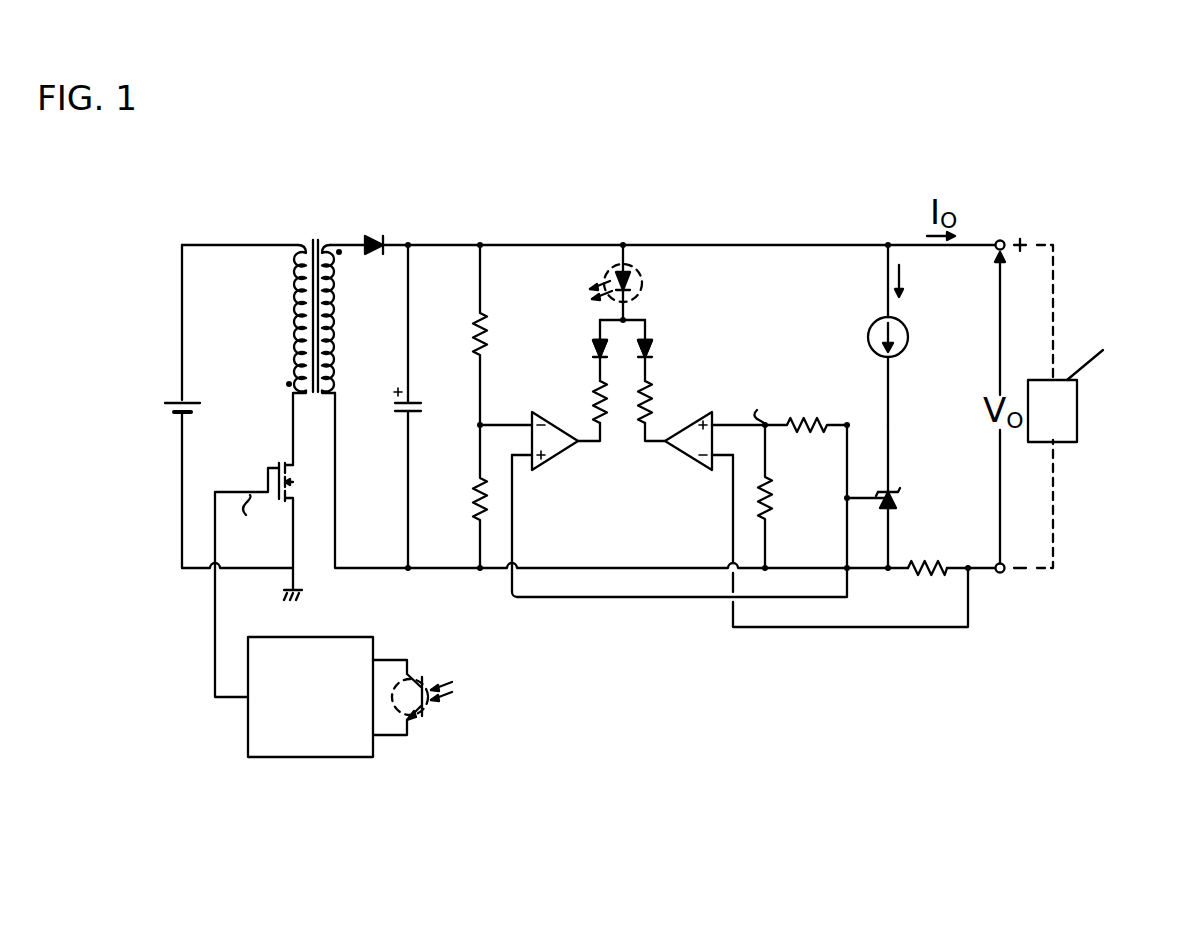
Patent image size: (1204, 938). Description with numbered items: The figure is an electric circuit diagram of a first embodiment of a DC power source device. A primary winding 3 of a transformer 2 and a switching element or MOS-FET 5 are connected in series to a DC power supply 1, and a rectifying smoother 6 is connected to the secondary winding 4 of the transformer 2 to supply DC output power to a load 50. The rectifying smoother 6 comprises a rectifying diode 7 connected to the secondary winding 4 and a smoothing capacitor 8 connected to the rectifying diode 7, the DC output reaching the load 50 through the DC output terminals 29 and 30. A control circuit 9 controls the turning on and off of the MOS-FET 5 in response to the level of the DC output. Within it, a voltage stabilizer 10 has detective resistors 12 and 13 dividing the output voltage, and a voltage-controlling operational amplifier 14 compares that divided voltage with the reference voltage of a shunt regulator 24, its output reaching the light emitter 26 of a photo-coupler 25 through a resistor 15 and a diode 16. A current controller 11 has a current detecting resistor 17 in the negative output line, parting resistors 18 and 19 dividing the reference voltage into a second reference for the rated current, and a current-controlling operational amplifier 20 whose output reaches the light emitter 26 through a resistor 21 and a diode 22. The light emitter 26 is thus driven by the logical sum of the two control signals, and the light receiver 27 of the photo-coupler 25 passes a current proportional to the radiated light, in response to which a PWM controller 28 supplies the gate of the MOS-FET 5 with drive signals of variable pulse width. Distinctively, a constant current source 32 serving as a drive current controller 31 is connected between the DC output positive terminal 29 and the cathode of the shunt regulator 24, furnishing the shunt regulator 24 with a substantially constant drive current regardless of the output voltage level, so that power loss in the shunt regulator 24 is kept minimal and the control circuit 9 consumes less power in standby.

The DC power supply 1 is at (175, 400).
The transformer 2 is at (315, 319).
The primary winding 3 is at (292, 322).
The secondary winding 4 is at (338, 322).
The MOS-FET 5 is at (272, 464).
The rectifying smoother 6 is at (394, 370).
The rectifying diode 7 is at (371, 235).
The smoothing capacitor 8 is at (396, 408).
The control circuit 9 is at (680, 697).
The voltage stabilizer 10 is at (477, 406).
The current controller 11 is at (792, 425).
The detective resistor 12 is at (472, 331).
The detective resistor 13 is at (472, 493).
The voltage-controlling operational amplifier 14 is at (552, 459).
The resistor 15 is at (593, 397).
The diode 16 is at (593, 353).
The current detecting resistor 17 is at (930, 565).
The parting resistor 18 is at (800, 421).
The parting resistor 19 is at (774, 498).
The current-controlling operational amplifier 20 is at (690, 459).
The resistor 21 is at (652, 397).
The diode 22 is at (652, 353).
The shunt regulator 24 is at (892, 490).
The photo-coupler 25 is at (532, 504).
The light emitter 26 is at (645, 289).
The light receiver 27 is at (419, 674).
The PWM controller 28 is at (316, 636).
The DC output positive terminal 29 is at (998, 238).
The DC output terminal 30 is at (998, 576).
The drive current controller 31 is at (892, 335).
The constant current source 32 is at (917, 337).
The load 50 is at (1069, 424).